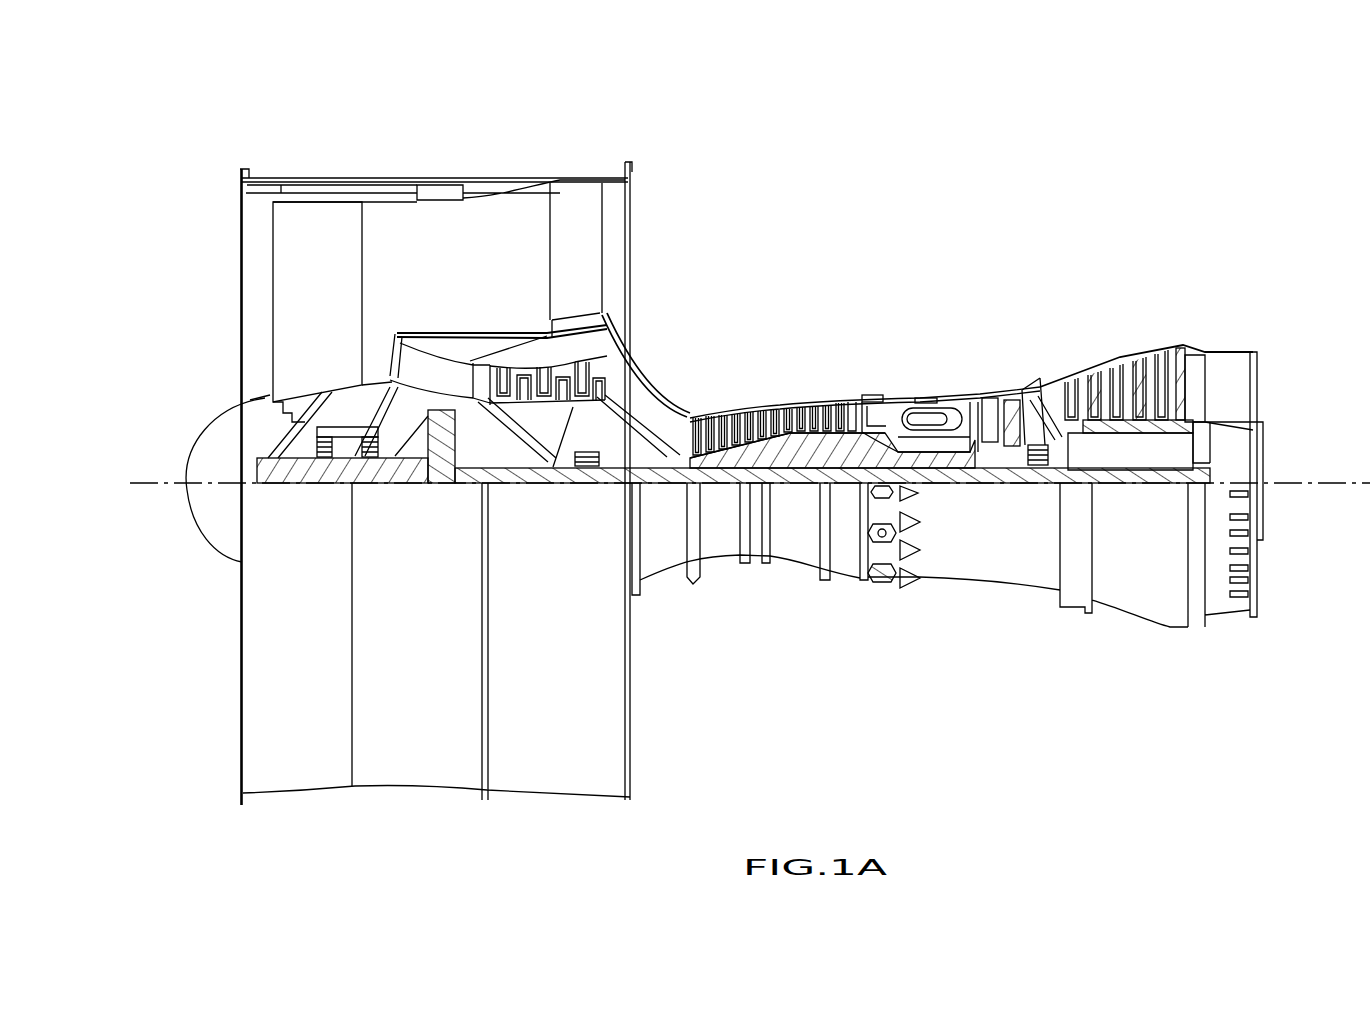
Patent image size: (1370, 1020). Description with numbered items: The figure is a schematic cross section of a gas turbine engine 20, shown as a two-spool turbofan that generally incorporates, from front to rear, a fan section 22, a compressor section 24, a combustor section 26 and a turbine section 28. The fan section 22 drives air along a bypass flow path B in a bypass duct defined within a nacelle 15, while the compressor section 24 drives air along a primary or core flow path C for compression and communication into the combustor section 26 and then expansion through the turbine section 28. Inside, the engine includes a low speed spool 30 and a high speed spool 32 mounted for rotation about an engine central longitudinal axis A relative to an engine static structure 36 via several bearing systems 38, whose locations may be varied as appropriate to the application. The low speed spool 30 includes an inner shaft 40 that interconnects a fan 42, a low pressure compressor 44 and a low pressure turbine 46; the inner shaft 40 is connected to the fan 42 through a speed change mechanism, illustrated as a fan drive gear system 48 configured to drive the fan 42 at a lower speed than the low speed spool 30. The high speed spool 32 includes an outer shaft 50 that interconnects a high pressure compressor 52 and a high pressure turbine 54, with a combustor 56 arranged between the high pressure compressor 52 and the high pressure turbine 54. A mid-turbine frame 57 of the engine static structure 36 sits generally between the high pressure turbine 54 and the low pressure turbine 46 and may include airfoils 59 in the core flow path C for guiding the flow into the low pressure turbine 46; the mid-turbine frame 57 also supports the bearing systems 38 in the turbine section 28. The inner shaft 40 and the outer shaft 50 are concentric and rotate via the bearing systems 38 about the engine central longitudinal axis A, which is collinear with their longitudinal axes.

The nacelle 15 is at (432, 188).
The gas turbine engine 20 is at (954, 186).
The fan section 22 is at (350, 156).
The compressor section 24 is at (680, 373).
The combustor section 26 is at (920, 354).
The turbine section 28 is at (1083, 322).
The low speed spool 30 is at (798, 483).
The high speed spool 32 is at (855, 430).
The engine static structure 36 is at (845, 560).
The bearing systems 38 is at (588, 483).
The inner shaft 40 is at (653, 483).
The fan 42 is at (328, 297).
The low pressure compressor 44 is at (568, 372).
The low pressure turbine 46 is at (1130, 365).
The fan drive gear system 48 is at (445, 483).
The outer shaft 50 is at (912, 480).
The high pressure compressor 52 is at (800, 412).
The high pressure turbine 54 is at (985, 395).
The combustor 56 is at (930, 420).
The mid-turbine frame 57 is at (1041, 370).
The airfoils 59 is at (1055, 415).
The engine central longitudinal axis A is at (1315, 480).
The bypass flow path B is at (380, 257).
The core flow path C is at (412, 358).